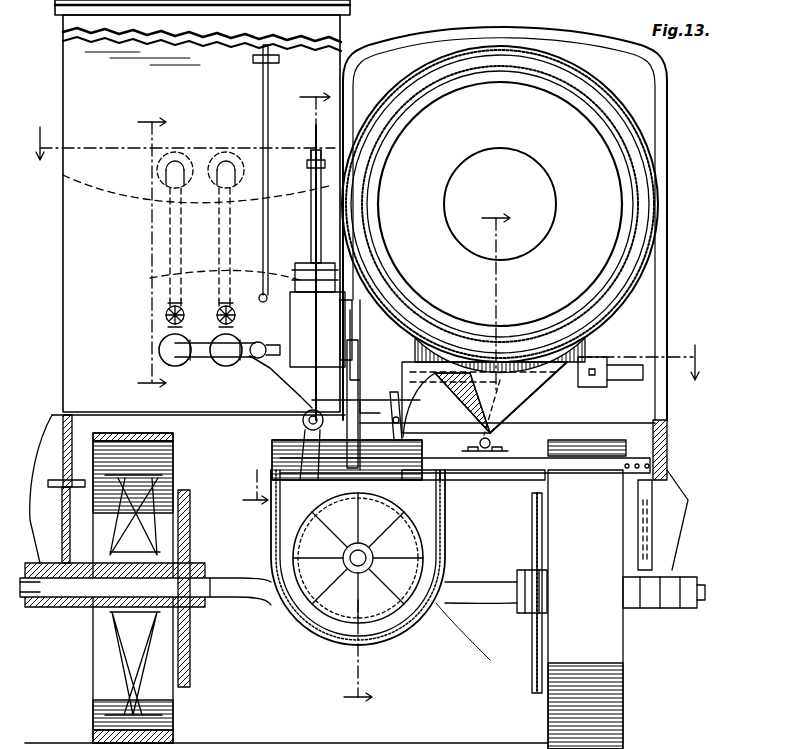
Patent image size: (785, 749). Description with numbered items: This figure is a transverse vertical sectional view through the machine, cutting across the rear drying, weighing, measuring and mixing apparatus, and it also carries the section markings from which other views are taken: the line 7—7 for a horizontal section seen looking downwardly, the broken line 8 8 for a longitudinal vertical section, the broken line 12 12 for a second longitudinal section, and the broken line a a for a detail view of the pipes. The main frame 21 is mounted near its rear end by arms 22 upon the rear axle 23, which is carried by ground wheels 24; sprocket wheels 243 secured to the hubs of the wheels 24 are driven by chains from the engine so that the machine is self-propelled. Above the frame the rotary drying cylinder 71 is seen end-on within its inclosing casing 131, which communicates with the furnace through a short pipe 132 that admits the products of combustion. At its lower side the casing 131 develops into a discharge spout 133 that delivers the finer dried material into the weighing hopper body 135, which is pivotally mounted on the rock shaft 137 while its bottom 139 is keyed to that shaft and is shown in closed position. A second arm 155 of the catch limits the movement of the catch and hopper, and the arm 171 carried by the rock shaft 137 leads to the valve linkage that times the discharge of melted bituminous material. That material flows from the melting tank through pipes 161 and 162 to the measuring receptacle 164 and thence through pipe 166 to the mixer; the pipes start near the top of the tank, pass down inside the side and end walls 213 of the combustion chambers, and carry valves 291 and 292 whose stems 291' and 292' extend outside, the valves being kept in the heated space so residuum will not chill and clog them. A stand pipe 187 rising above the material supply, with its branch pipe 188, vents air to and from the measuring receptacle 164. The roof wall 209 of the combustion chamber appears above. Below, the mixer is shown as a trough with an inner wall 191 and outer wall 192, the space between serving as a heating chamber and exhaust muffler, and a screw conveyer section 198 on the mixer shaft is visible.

The line 7— 7 is at (365, 253).
The broken line 8 8 is at (427, 459).
The broken line 12 12 is at (284, 302).
The broken line a a is at (152, 251).
The main frame 21 is at (63, 445).
The arms 22 is at (40, 512).
The rear axle 23 is at (418, 652).
The wheels 24 is at (95, 686).
The rotary drying cylinder 71 is at (368, 165).
The inclosing casing 131 is at (618, 110).
The short pipe 132 is at (545, 170).
The discharge spout 133 is at (415, 350).
The weighing hopper body 135 is at (535, 388).
The rock shaft 137 is at (488, 472).
The hopper bottom 139 is at (432, 470).
The second arm 155 is at (392, 400).
The pipe 161 is at (219, 240).
The pipe 162 is at (168, 253).
The measuring receptacle 164 is at (292, 320).
The pipe 166 is at (290, 470).
The arm 171 is at (494, 440).
The stand pipe 187 is at (263, 117).
The branch pipe 188 is at (297, 272).
The inner wall 191 is at (290, 528).
The outer wall 192 is at (446, 546).
The screw conveyer section 198 is at (408, 534).
The roof wall 209 is at (662, 118).
The side and end walls 213 is at (63, 307).
The sprocket wheels 243 is at (188, 660).
The valve 291 is at (239, 286).
The valve stem 291' is at (210, 321).
The valve 292 is at (134, 298).
The valve stem 292' is at (136, 328).